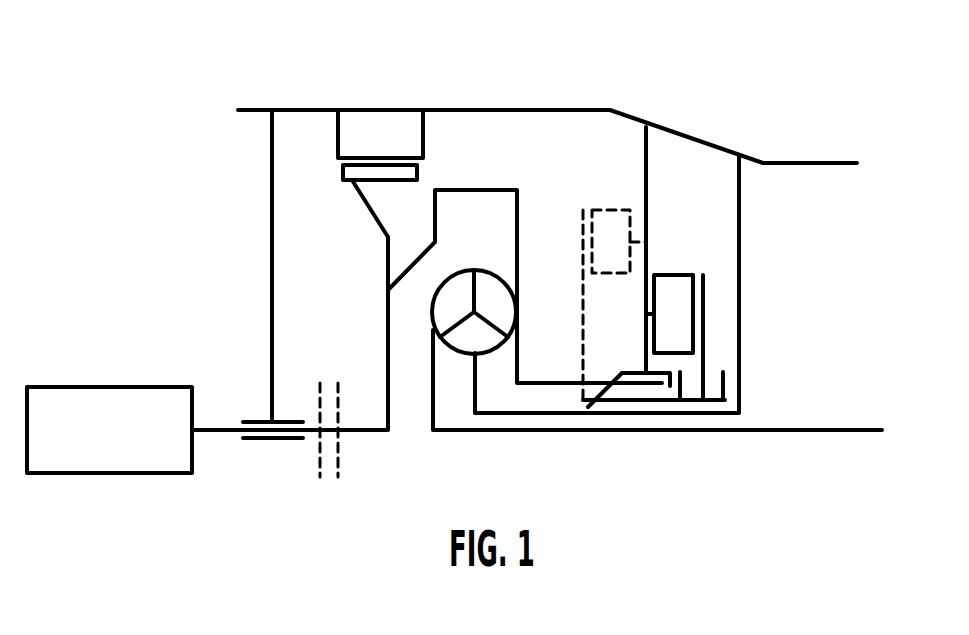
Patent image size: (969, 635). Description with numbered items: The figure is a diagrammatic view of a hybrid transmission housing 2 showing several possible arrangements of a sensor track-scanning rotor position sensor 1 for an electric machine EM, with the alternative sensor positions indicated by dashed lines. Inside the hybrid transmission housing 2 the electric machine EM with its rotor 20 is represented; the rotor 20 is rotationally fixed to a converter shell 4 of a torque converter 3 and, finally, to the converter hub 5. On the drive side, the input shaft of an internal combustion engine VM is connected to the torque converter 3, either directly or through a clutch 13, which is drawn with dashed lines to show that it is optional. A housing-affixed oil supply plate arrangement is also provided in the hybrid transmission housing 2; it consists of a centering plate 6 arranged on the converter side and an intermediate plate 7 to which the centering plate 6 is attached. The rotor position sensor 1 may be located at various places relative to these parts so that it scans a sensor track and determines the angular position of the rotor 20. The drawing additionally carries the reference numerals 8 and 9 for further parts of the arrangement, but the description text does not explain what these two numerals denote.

The rotor position sensor 1 is at (622, 208).
The hybrid transmission housing 2 is at (460, 110).
The torque converter 3 is at (460, 364).
The converter shell 4 is at (493, 189).
The converter hub 5 is at (537, 383).
The centering plate 6 is at (650, 155).
The intermediate plate 7 is at (739, 191).
The valve 8 is at (583, 237).
The pressure sensor 9 is at (723, 383).
The clutch 13 is at (329, 484).
The rotor 20 is at (363, 200).
The electric machine EM is at (370, 106).
The internal combustion engine VM is at (120, 458).